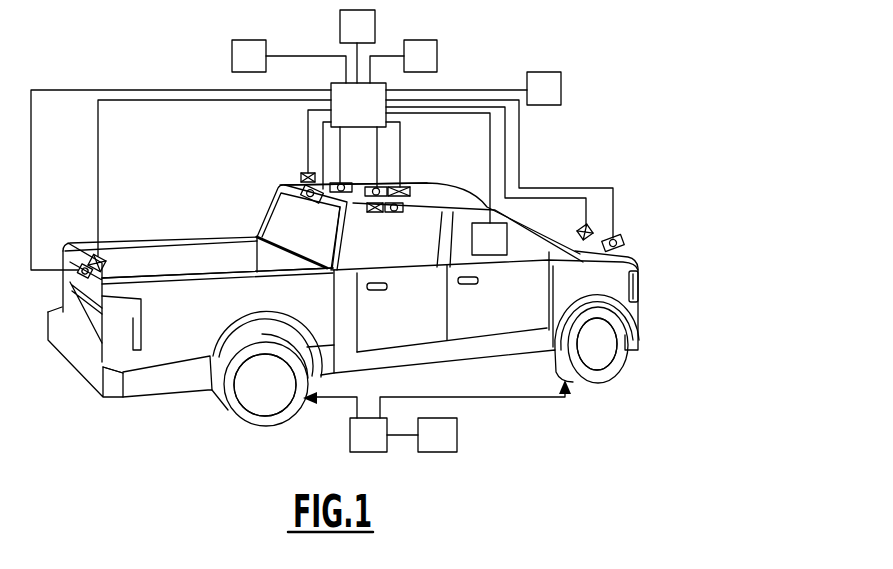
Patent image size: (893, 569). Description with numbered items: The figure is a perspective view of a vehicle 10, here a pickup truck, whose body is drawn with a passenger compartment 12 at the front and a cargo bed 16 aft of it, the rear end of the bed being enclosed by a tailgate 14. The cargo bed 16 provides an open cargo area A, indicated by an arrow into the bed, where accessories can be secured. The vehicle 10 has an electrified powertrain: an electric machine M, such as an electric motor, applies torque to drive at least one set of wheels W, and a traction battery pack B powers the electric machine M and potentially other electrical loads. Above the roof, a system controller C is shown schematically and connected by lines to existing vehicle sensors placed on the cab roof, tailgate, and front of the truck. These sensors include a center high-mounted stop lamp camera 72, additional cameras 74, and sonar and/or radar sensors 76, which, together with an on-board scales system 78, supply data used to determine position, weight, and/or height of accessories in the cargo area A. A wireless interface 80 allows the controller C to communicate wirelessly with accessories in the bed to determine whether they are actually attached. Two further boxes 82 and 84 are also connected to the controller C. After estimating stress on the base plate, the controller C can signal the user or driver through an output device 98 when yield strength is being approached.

The vehicle 10 is at (558, 165).
The passenger compartment 12 is at (386, 256).
The tailgate 14 is at (90, 308).
The cargo bed 16 is at (248, 257).
The center high-mounted stop lamp (CHMSL) camera 72 is at (313, 201).
The cameras 74 is at (335, 181).
The sonar and/or radar sensors 76 is at (303, 175).
The on-board scales (OBS) system 78 is at (289, 61).
The wireless interface 80 is at (403, 61).
The display 82 is at (489, 239).
The communication module 84 is at (357, 46).
The output device 98 is at (473, 88).
The system controller C is at (322, 176).
The electric machine M is at (437, 416).
The traction battery pack B is at (437, 435).
The wheels W is at (260, 398).
The cargo area A is at (205, 266).